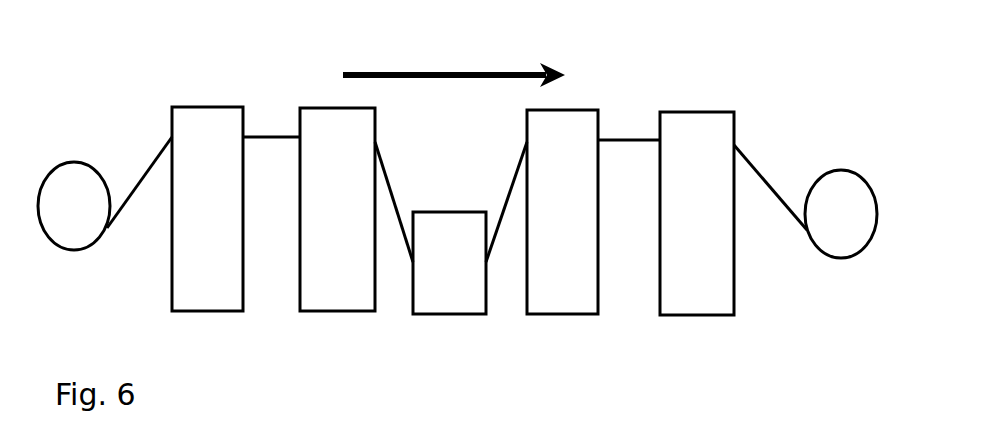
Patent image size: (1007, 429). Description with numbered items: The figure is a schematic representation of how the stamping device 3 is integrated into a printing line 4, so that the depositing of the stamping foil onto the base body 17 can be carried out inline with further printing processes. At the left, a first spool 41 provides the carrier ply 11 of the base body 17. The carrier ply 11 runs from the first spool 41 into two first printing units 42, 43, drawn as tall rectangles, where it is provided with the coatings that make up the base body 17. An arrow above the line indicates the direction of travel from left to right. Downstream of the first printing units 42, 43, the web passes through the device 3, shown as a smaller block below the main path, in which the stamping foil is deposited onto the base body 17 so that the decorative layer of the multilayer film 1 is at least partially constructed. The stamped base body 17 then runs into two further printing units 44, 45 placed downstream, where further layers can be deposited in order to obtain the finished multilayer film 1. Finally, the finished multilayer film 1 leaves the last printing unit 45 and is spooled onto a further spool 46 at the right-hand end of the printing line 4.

The multilayer film 1 is at (777, 200).
The device 3 is at (449, 302).
The printing line 4 is at (788, 77).
The carrier ply 11 is at (138, 187).
The base body 17 is at (393, 183).
The first spool 41 is at (60, 183).
The first printing unit 42 is at (200, 128).
The first printing unit 43 is at (316, 128).
The downstream printing unit 44 is at (585, 130).
The downstream printing unit 45 is at (694, 130).
The further spool 46 is at (838, 230).